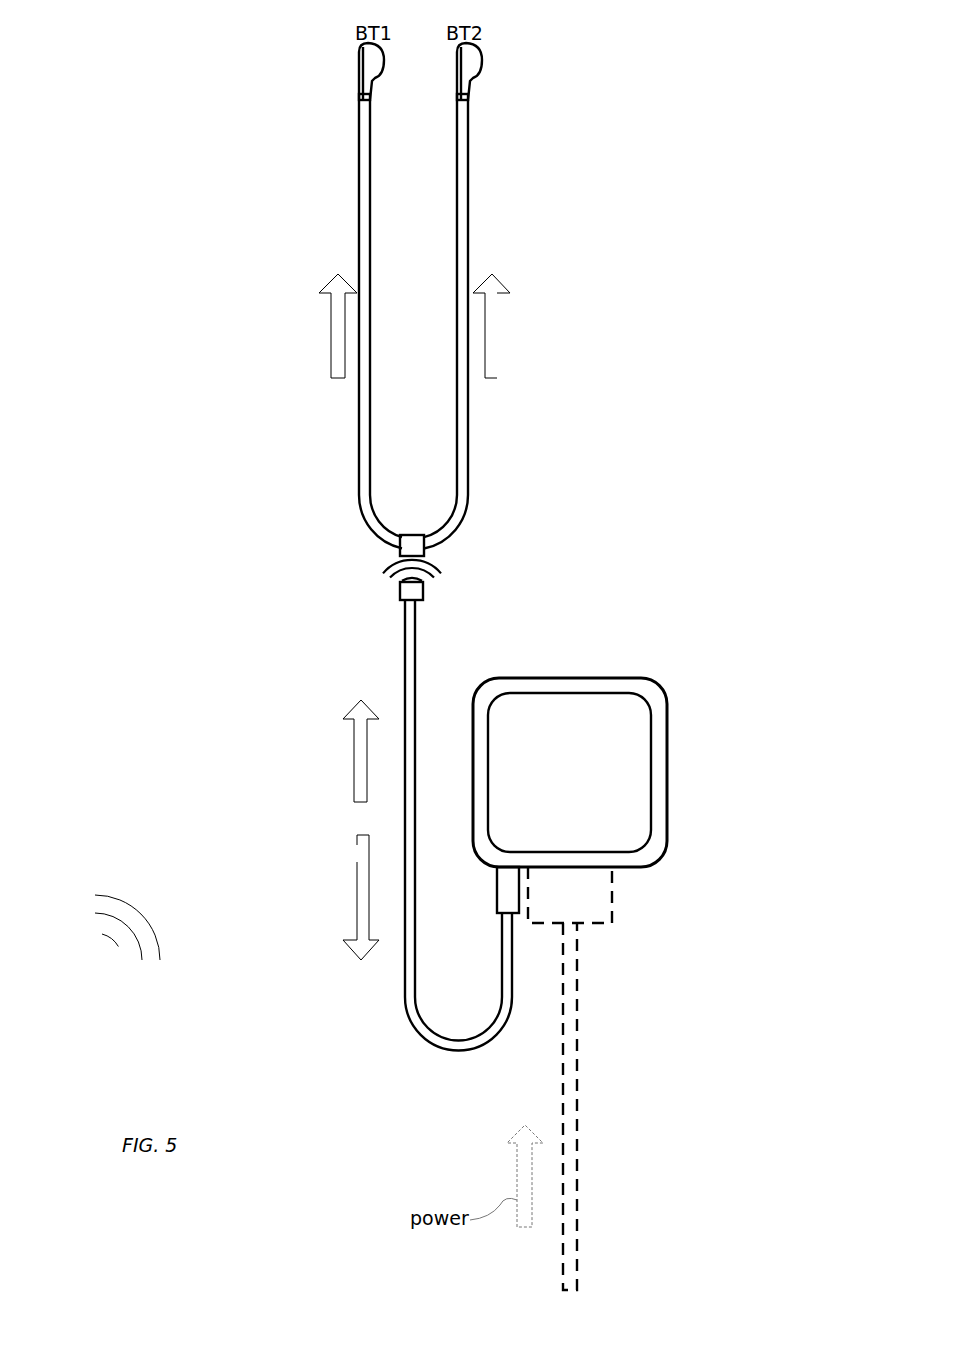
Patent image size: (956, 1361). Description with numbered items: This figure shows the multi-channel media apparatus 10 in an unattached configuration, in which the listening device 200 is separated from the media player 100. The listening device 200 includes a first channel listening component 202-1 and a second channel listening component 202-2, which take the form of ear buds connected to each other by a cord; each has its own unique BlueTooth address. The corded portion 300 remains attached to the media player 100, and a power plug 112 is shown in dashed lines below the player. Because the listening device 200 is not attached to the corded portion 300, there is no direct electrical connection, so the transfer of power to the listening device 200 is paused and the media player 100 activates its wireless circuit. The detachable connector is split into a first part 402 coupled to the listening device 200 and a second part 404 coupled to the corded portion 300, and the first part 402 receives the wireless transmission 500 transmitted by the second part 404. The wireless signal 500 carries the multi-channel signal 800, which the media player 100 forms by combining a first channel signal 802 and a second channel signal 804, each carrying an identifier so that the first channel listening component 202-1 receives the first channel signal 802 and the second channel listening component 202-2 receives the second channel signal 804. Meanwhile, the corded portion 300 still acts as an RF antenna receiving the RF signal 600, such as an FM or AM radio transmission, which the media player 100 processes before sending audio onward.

The media apparatus 10 is at (108, 57).
The media player 100 is at (589, 783).
The power plug 112 is at (578, 1040).
The listening device 200 is at (590, 186).
The first channel listening component 202-1 is at (357, 84).
The second channel listening component 202-2 is at (481, 78).
The corded portion 300 is at (405, 1012).
The first part 402 is at (412, 533).
The second part 404 is at (427, 595).
The wireless transmission 500 is at (382, 576).
The RF signal 600 is at (357, 856).
The multi-channel audio signal 800 is at (357, 760).
The first channel signal 802 is at (331, 290).
The second channel signal 804 is at (502, 282).